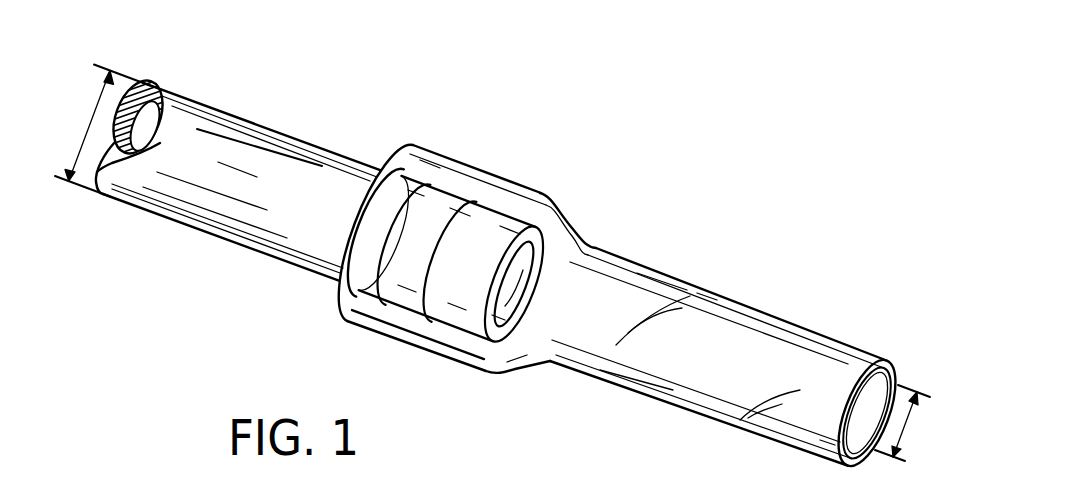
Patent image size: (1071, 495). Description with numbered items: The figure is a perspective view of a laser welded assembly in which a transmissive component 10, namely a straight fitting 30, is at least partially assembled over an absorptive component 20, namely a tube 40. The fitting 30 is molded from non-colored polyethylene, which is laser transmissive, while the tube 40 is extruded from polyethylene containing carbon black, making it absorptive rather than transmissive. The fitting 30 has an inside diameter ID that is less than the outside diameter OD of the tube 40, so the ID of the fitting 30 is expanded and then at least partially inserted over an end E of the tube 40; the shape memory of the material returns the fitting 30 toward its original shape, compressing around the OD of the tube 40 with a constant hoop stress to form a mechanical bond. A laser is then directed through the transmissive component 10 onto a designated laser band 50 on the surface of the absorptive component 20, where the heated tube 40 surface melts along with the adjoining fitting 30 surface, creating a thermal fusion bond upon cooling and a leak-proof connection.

The transmissive component 10 is at (546, 196).
The absorptive component 20 is at (334, 175).
The fitting 30 is at (720, 306).
The tube 40 is at (223, 150).
The laser band 50 is at (435, 228).
The end E is at (528, 308).
The outside diameter OD is at (93, 117).
The inside diameter ID is at (900, 417).